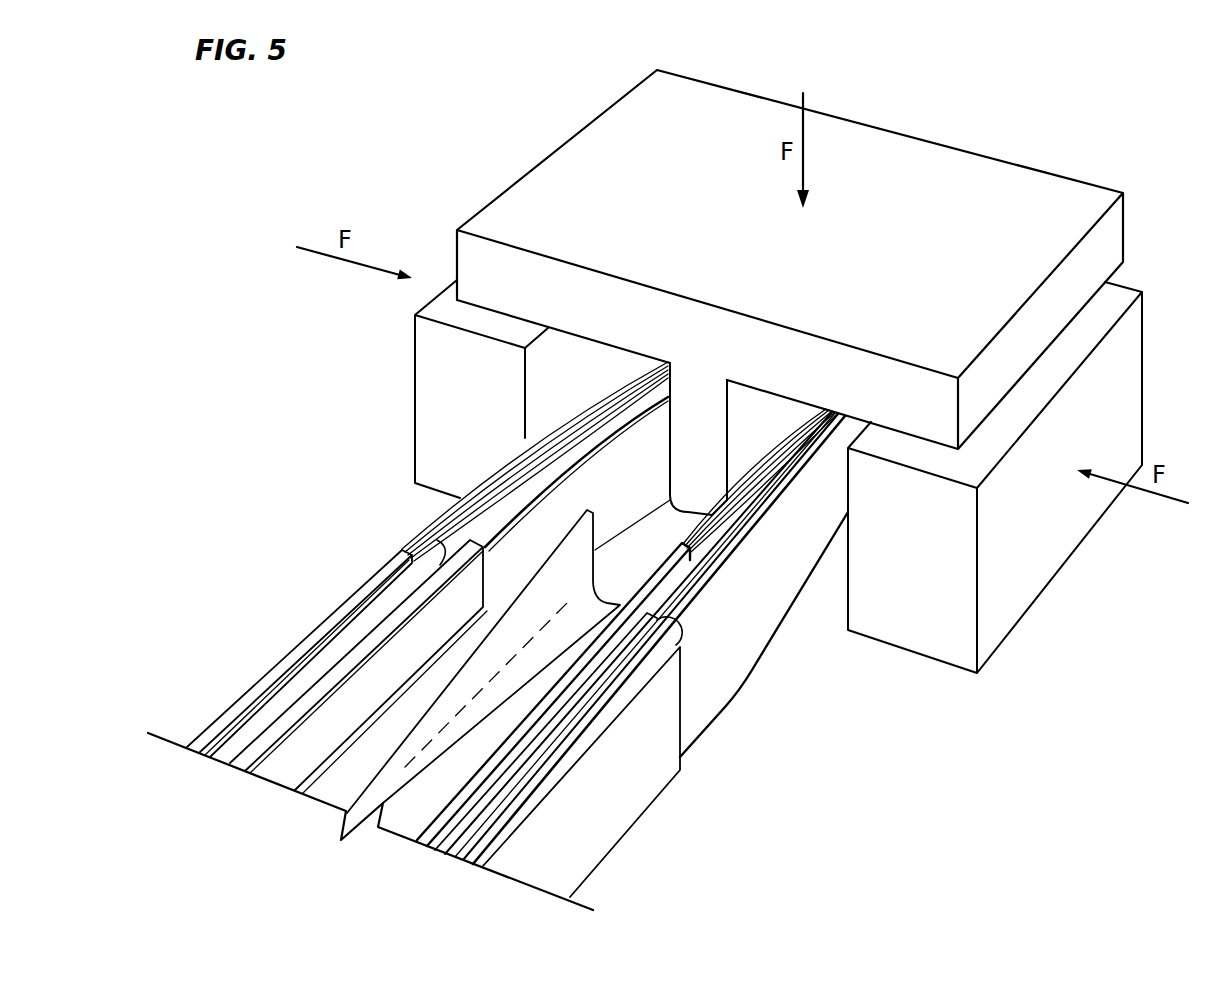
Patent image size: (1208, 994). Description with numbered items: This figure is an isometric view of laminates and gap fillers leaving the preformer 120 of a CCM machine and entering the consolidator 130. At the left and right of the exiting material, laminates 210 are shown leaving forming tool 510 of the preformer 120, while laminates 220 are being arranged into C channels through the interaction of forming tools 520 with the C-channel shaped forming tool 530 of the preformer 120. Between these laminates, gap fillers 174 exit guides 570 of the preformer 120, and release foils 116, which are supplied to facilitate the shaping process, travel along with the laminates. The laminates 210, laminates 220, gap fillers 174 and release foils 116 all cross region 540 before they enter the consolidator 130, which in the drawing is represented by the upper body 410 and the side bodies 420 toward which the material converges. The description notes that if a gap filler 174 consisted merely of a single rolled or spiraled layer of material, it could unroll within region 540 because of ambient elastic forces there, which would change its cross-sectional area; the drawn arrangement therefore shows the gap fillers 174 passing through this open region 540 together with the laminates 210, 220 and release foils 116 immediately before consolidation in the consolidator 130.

The press plate 410 is at (573, 155).
The support blocks 420 is at (433, 383).
The laminates 210 is at (557, 414).
The laminates 220 is at (590, 488).
The gap fillers 174 is at (508, 493).
The release foils 116 is at (428, 527).
The forming tool 510 is at (232, 708).
The forming tools 520 is at (287, 763).
The C-channel shaped forming tool 530 is at (317, 807).
The guides 570 is at (230, 750).
The region 540 is at (745, 818).
The preformer 120 is at (733, 858).
The consolidator 130 is at (994, 745).